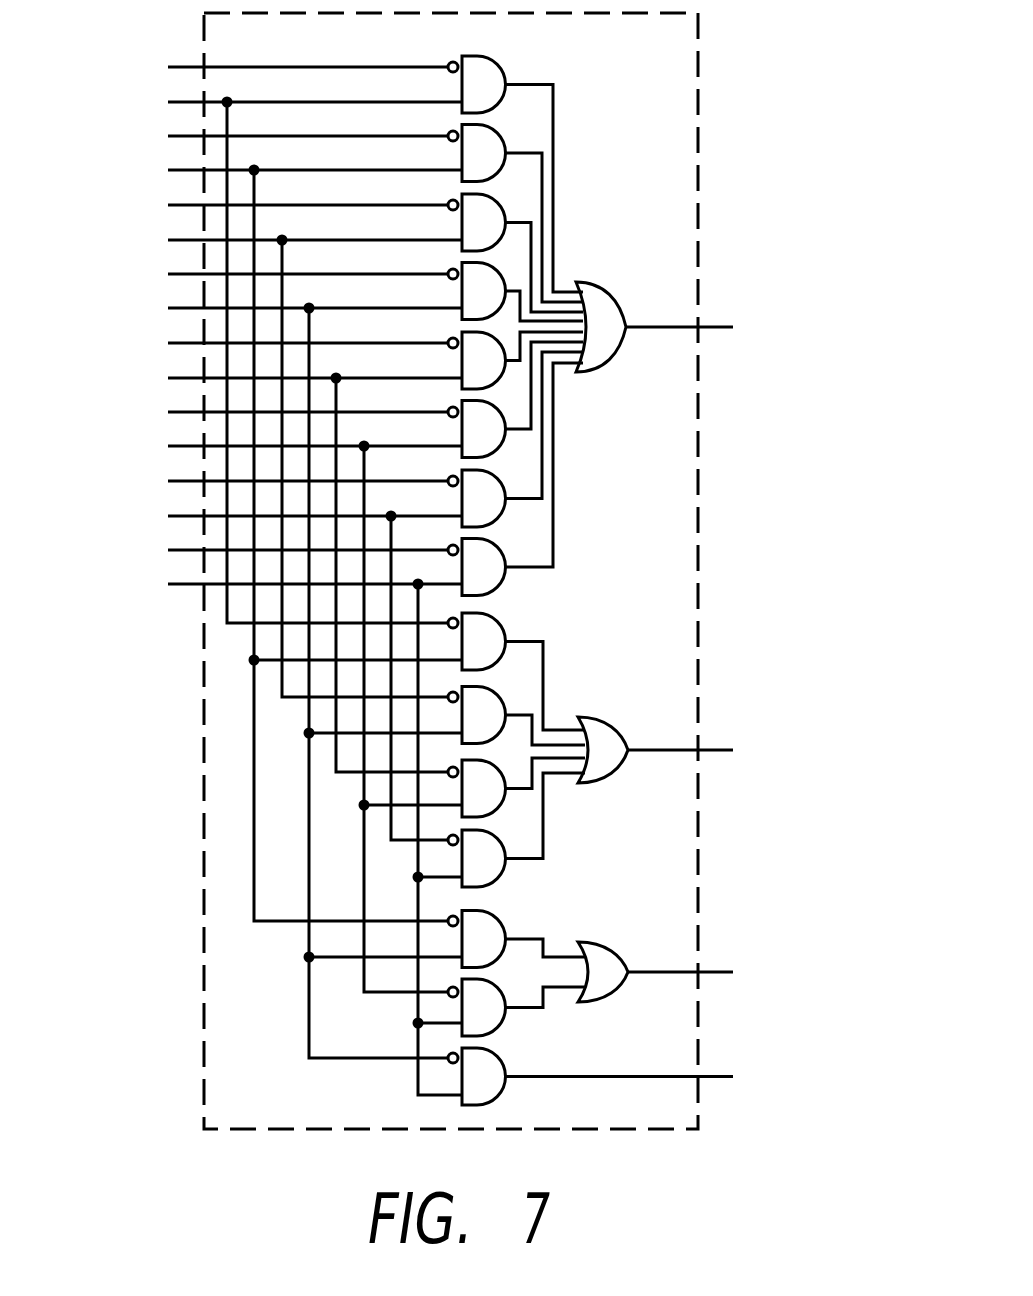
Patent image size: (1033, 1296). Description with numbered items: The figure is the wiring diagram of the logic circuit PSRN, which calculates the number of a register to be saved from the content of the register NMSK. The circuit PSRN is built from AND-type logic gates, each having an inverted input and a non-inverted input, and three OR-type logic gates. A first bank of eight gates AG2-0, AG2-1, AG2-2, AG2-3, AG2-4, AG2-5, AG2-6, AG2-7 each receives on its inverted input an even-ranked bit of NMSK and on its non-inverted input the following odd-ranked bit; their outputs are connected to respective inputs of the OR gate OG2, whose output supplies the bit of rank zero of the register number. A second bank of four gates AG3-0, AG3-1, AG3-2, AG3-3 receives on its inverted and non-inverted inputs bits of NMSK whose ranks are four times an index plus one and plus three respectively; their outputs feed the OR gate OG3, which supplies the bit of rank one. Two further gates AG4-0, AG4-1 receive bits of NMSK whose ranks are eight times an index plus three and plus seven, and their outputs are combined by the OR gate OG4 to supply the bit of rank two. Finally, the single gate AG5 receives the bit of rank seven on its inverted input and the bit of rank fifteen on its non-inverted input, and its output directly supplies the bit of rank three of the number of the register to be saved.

The logic circuit PSRN is at (451, 571).
The AND-type logic gate AG2-0 is at (498, 64).
The AND-type logic gate AG2-1 is at (498, 134).
The AND-type logic gate AG2-2 is at (498, 203).
The AND-type logic gate AG2-3 is at (500, 272).
The AND-type logic gate AG2-4 is at (498, 380).
The AND-type logic gate AG2-5 is at (500, 443).
The AND-type logic gate AG2-6 is at (500, 513).
The AND-type logic gate AG2-7 is at (507, 577).
The OR-type logic gate OG2 is at (606, 298).
The AND-type logic gate AG3-0 is at (500, 630).
The AND-type logic gate AG3-1 is at (498, 697).
The AND-type logic gate AG3-2 is at (500, 800).
The AND-type logic gate AG3-3 is at (505, 870).
The OR-type logic gate OG3 is at (612, 737).
The AND-type logic gate AG4-0 is at (505, 926).
The AND-type logic gate AG4-1 is at (505, 1020).
The OR-type logic gate OG4 is at (608, 958).
The AND-type logic gate AG5 is at (507, 1090).